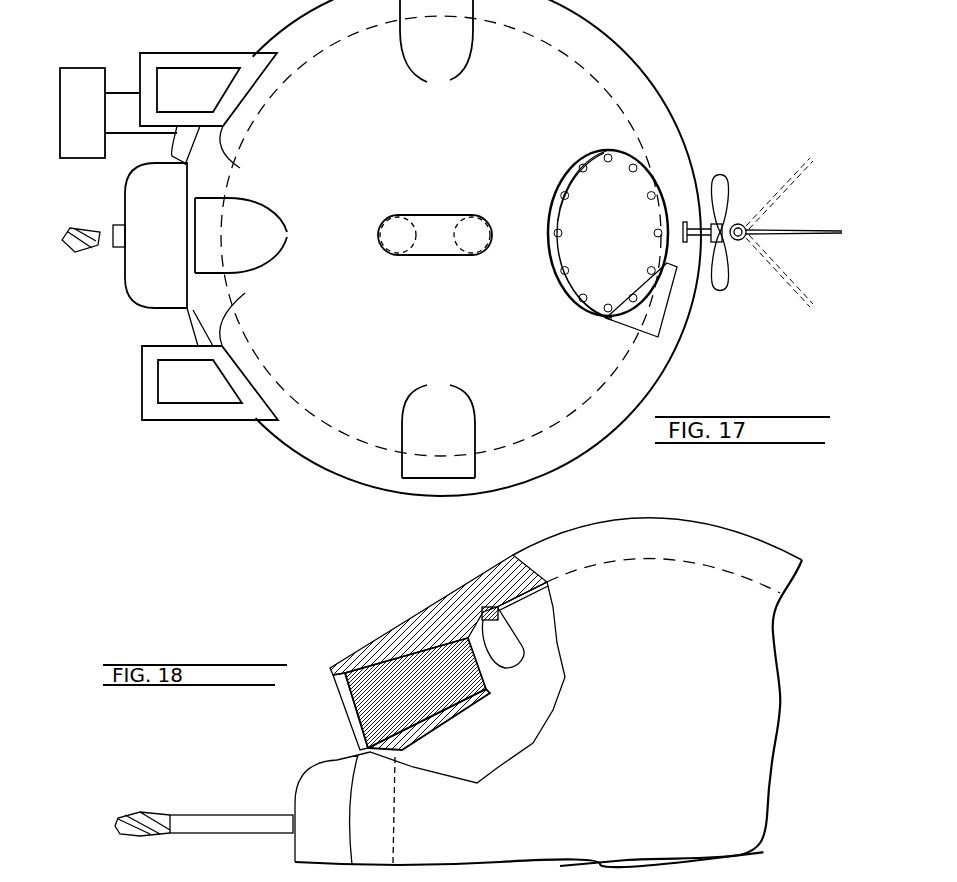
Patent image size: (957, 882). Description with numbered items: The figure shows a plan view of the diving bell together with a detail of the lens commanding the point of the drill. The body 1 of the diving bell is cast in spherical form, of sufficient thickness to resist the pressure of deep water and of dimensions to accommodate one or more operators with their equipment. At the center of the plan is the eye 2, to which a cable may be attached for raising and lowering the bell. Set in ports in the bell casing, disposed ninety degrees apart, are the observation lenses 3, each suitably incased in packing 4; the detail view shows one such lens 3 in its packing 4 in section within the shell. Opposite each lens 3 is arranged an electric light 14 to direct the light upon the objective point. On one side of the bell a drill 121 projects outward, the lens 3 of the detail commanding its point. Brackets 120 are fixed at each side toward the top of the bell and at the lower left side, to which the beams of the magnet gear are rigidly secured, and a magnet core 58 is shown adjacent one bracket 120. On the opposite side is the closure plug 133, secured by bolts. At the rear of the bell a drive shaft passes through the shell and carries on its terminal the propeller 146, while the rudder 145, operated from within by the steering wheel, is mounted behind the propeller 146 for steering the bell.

In FIG. 17, the body of diving bell 1 is at (249, 522).
In FIG. 18, the body of diving bell 1 is at (560, 543).
In FIG. 17, the eye 2 is at (438, 248).
In FIG. 17, the observation lenses 3 is at (217, 143).
In FIG. 18, the observation lenses 3 is at (373, 697).
In FIG. 18, the packing 4 is at (335, 690).
In FIG. 18, the electric lights 14 is at (502, 638).
In FIG. 17, the magnet core 58 is at (83, 76).
In FIG. 17, the bracket 120 is at (165, 63).
In FIG. 17, the drill 121 is at (87, 247).
In FIG. 18, the drill 121 is at (210, 822).
In FIG. 17, the closure plug 133 is at (628, 190).
In FIG. 17, the rudder 145 is at (783, 232).
In FIG. 17, the propeller 146 is at (722, 290).